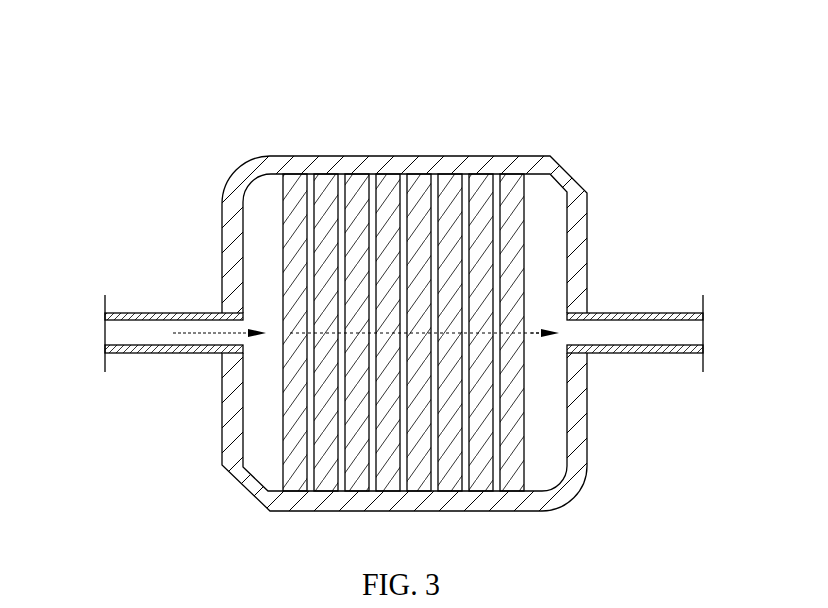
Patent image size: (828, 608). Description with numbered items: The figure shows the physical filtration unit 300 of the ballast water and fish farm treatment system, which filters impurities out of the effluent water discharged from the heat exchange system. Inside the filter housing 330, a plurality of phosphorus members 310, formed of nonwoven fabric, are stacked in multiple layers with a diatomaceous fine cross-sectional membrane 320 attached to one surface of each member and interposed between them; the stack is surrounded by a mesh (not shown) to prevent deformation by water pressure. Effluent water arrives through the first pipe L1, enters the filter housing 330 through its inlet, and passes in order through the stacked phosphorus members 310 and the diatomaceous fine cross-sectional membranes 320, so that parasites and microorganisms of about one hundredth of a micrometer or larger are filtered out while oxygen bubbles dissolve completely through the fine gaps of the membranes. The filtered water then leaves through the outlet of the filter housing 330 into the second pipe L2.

The physical filtration unit 300 is at (259, 121).
The phosphorus member 310 is at (359, 152).
The diatomaceous fine cross-sectional membrane 320 is at (460, 157).
The filter housing 330 is at (513, 156).
The first pipe L1 is at (162, 312).
The second pipe L2 is at (650, 312).